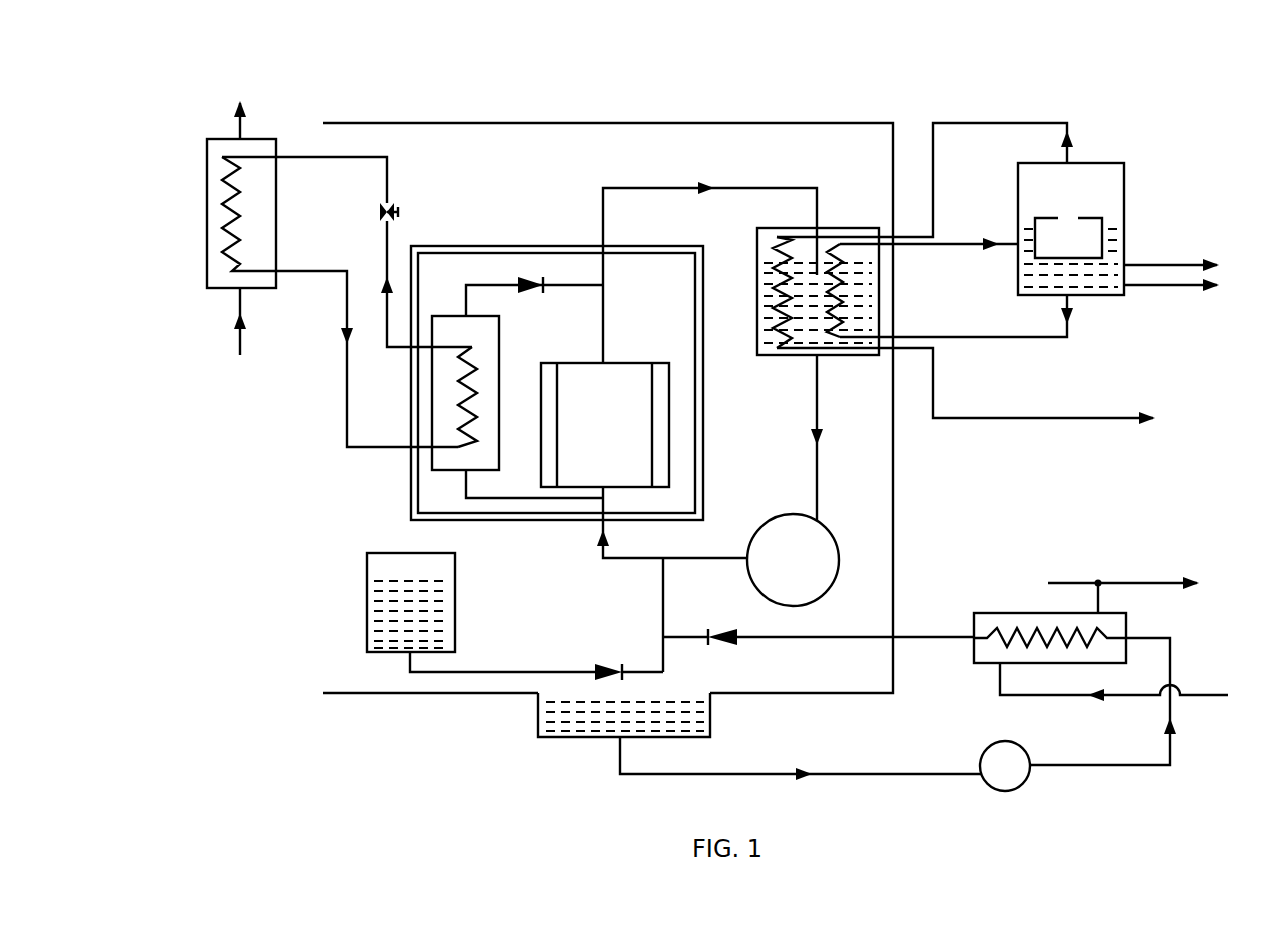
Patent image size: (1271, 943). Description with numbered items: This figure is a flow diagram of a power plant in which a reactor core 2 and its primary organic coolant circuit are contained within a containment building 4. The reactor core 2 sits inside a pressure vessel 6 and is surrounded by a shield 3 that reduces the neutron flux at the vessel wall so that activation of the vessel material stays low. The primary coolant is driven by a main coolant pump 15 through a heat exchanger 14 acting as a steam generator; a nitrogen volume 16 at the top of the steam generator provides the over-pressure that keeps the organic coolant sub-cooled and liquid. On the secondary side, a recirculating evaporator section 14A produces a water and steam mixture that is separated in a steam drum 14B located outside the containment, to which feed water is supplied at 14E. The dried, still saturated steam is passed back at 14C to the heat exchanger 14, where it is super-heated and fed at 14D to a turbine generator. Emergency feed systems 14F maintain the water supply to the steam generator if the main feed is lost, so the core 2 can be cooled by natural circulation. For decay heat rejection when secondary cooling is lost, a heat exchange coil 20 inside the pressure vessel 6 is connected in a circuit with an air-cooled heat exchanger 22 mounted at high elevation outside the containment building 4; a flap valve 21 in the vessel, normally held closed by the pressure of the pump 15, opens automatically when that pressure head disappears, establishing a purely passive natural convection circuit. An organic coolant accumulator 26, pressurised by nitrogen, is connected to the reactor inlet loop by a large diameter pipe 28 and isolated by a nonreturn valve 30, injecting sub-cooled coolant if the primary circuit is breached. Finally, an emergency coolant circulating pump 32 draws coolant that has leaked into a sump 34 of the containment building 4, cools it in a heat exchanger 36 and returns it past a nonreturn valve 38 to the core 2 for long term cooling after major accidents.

The reactor core 2 is at (605, 425).
The shield 3 is at (663, 373).
The containment building 4 is at (320, 532).
The pressure vessel 6 is at (511, 243).
The heat exchanger 14 is at (770, 337).
The recirculating evaporator section 14A is at (962, 247).
The steam drum 14B is at (1103, 190).
The steam return 14C is at (994, 120).
The super-heated steam feed 14D is at (1035, 417).
The feed water supply 14E is at (1168, 262).
The emergency feed system 14F is at (1167, 288).
The main coolant pump 15 is at (793, 480).
The nitrogen volume 16 is at (770, 237).
The heat exchange coil 20 is at (452, 398).
The flap valve 21 is at (528, 295).
The air-cooled heat exchanger 22 is at (218, 273).
The organic coolant accumulator 26 is at (372, 610).
The large diameter pipe 28 is at (490, 692).
The nonreturn valve 30 is at (603, 660).
The emergency coolant circulating pump 32 is at (1005, 766).
The sump 34 is at (390, 203).
The heat exchanger 36 is at (1025, 623).
The nonreturn valve 38 is at (727, 647).